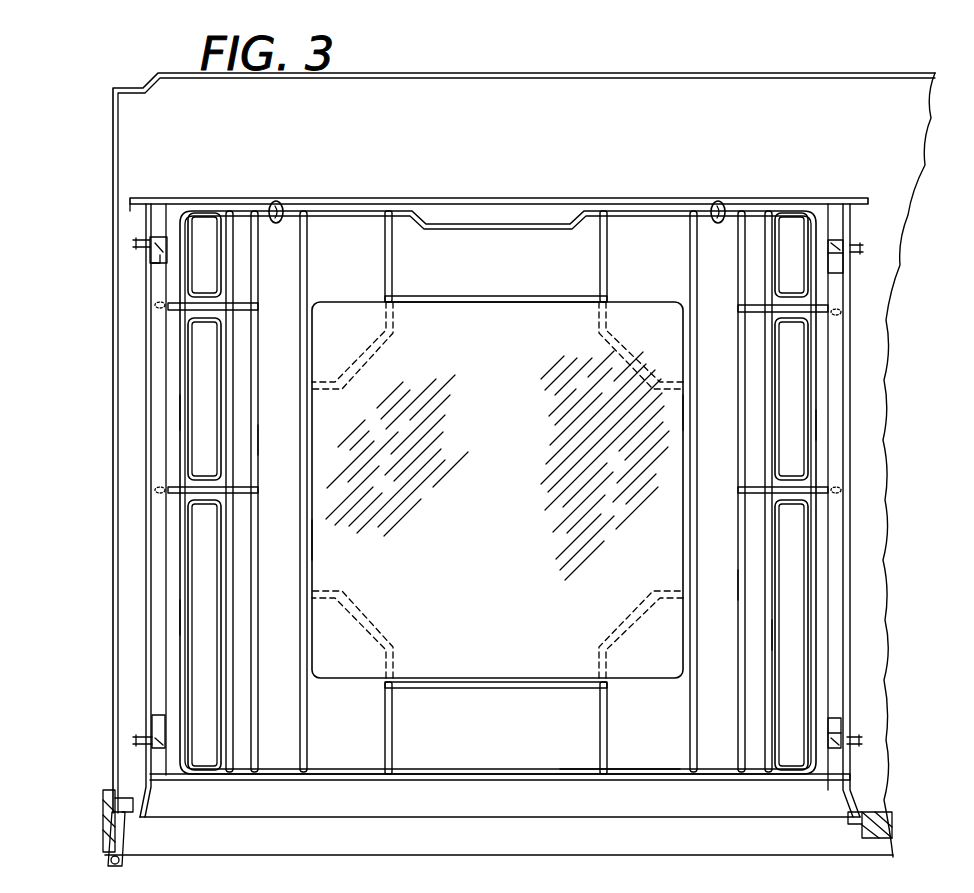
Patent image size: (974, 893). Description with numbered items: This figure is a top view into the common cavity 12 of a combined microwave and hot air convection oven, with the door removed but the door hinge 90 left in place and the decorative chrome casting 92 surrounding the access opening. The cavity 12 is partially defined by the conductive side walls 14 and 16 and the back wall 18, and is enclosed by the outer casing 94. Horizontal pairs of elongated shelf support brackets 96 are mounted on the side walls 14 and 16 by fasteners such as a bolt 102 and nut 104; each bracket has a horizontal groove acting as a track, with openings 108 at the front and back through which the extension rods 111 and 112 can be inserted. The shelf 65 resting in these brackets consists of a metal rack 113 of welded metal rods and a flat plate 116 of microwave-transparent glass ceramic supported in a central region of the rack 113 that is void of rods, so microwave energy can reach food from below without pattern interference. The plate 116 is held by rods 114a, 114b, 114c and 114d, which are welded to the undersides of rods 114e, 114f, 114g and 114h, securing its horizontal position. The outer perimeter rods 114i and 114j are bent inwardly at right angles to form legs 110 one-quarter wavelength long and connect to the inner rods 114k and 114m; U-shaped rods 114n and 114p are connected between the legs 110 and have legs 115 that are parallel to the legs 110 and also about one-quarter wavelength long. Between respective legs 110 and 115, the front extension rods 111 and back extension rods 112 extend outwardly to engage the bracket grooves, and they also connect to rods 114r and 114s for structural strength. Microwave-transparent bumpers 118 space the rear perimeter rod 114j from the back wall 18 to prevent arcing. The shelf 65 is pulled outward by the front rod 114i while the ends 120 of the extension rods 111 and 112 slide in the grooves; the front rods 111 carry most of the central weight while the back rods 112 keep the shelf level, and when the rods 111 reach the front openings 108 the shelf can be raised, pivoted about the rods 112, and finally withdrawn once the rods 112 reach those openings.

The common cavity 12 is at (643, 275).
The side wall 14 is at (855, 292).
The side wall 16 is at (145, 370).
The back wall 18 is at (450, 198).
The shelf 65 is at (433, 788).
The door hinge 90 is at (122, 843).
The decorative chrome casting 92 is at (108, 817).
The outer casing 94 is at (561, 80).
The shelf support bracket 96 is at (835, 455).
The bolt 102 is at (838, 240).
The nut 104 is at (862, 248).
The opening 108 is at (148, 245).
The leg 110 is at (218, 293).
The front extension rod 111 is at (236, 489).
The back extension rod 112 is at (240, 310).
The metal rack 113 is at (589, 776).
The plate support rod 114a is at (392, 328).
The plate support rod 114b is at (608, 360).
The plate support rod 114c is at (625, 615).
The plate support rod 114d is at (362, 604).
The rack rod 114e is at (508, 295).
The rack rod 114f is at (683, 412).
The rack rod 114g is at (515, 690).
The rack rod 114h is at (310, 545).
The outer perimeter rod 114i is at (535, 780).
The outer perimeter rod 114j is at (468, 228).
The inner rod 114k is at (773, 640).
The inner rod 114m is at (180, 617).
The U-shaped rod 114n is at (822, 425).
The U-shaped rod 114p is at (178, 412).
The rod 114r is at (740, 585).
The rod 114s is at (262, 440).
The leg 115 is at (210, 325).
The flat plate 116 is at (348, 302).
The microwave transparent bumper 118 is at (276, 202).
The end 120 is at (158, 305).